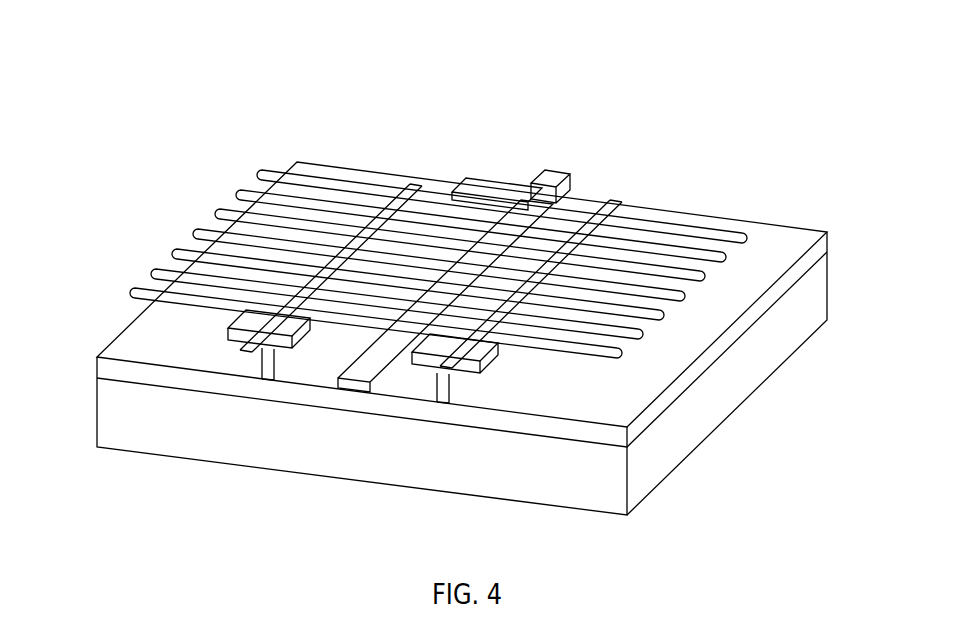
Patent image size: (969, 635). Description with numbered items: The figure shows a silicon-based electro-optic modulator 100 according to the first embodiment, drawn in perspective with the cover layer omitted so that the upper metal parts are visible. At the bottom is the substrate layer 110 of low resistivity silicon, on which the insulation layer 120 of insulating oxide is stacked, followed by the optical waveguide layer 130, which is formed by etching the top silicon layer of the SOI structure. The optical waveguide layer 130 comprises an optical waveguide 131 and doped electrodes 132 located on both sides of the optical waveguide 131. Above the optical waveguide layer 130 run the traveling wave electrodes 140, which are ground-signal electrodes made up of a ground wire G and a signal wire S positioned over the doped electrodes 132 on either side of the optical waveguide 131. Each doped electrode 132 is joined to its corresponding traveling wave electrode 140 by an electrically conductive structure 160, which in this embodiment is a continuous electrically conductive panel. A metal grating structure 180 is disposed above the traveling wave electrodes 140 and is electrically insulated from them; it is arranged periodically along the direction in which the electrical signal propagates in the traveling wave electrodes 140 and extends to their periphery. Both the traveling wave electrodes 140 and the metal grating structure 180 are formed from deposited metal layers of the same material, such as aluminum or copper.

The silicon-based electro-optic modulator 100 is at (124, 41).
The substrate layer 110 is at (792, 318).
The insulation layer 120 is at (718, 348).
The optical waveguide layer 130 is at (430, 366).
The optical waveguide 131 is at (343, 381).
The doped electrodes 132 is at (263, 380).
The traveling wave electrodes 140 is at (230, 322).
The electrically conductive structure 160 is at (437, 378).
The metal grating structure 180 is at (176, 299).